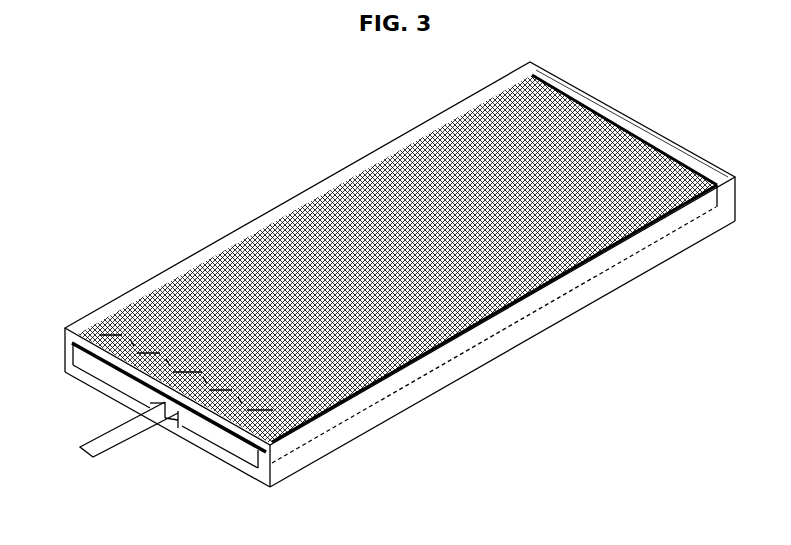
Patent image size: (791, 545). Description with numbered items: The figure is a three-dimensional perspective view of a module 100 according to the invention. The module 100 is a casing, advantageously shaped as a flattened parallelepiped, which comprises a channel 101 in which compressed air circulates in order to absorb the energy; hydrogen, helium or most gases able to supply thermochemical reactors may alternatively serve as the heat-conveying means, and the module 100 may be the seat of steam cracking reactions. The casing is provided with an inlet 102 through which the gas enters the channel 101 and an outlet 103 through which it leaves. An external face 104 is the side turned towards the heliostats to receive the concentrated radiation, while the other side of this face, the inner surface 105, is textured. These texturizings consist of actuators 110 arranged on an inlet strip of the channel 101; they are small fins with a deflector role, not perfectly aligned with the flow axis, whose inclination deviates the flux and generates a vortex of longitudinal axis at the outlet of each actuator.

The module 100 is at (273, 146).
The channel 101 is at (224, 455).
The inlet 102 is at (78, 403).
The outlet 103 is at (633, 96).
The external face 104 is at (408, 161).
The inner surface 105 is at (185, 426).
The actuators 110 is at (262, 402).